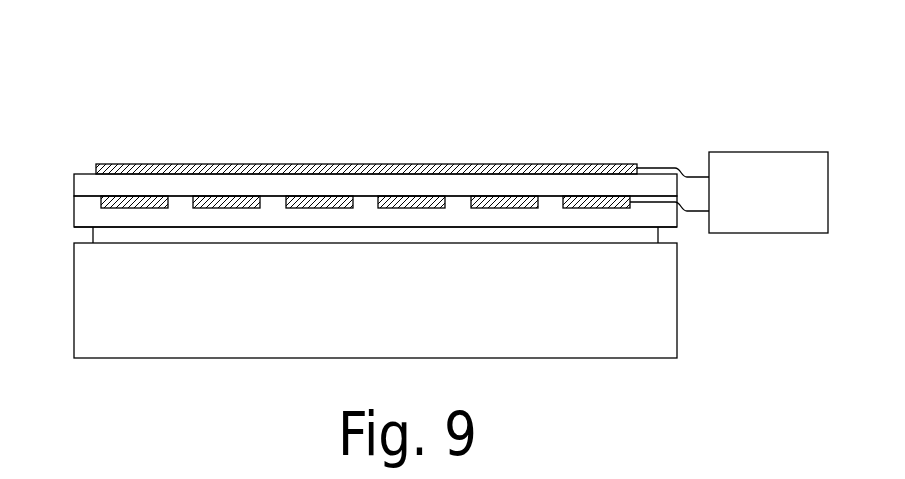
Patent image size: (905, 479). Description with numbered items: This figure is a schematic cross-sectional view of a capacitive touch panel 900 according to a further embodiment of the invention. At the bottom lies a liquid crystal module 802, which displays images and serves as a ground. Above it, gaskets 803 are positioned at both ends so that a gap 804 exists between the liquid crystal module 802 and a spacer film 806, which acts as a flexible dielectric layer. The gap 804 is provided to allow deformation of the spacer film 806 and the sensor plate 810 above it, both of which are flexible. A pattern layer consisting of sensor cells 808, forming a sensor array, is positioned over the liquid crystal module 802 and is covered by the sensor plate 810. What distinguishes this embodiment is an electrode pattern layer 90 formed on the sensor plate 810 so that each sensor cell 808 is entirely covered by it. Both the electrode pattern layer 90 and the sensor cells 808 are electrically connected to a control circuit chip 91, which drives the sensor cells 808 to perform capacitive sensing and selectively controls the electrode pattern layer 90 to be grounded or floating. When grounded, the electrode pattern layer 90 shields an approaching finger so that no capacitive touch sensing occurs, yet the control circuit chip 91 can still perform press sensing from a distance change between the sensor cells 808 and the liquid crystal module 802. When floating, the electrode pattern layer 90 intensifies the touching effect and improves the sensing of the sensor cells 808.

The capacitive touch panel 900 is at (163, 49).
The liquid crystal module 802 is at (375, 300).
The gaskets 803 is at (84, 237).
The gap 804 is at (192, 237).
The spacer film 806 is at (282, 227).
The sensor cells 808 is at (391, 201).
The sensor plate 810 is at (477, 186).
The electrode pattern layer 90 is at (558, 168).
The control circuit chip 91 is at (762, 152).